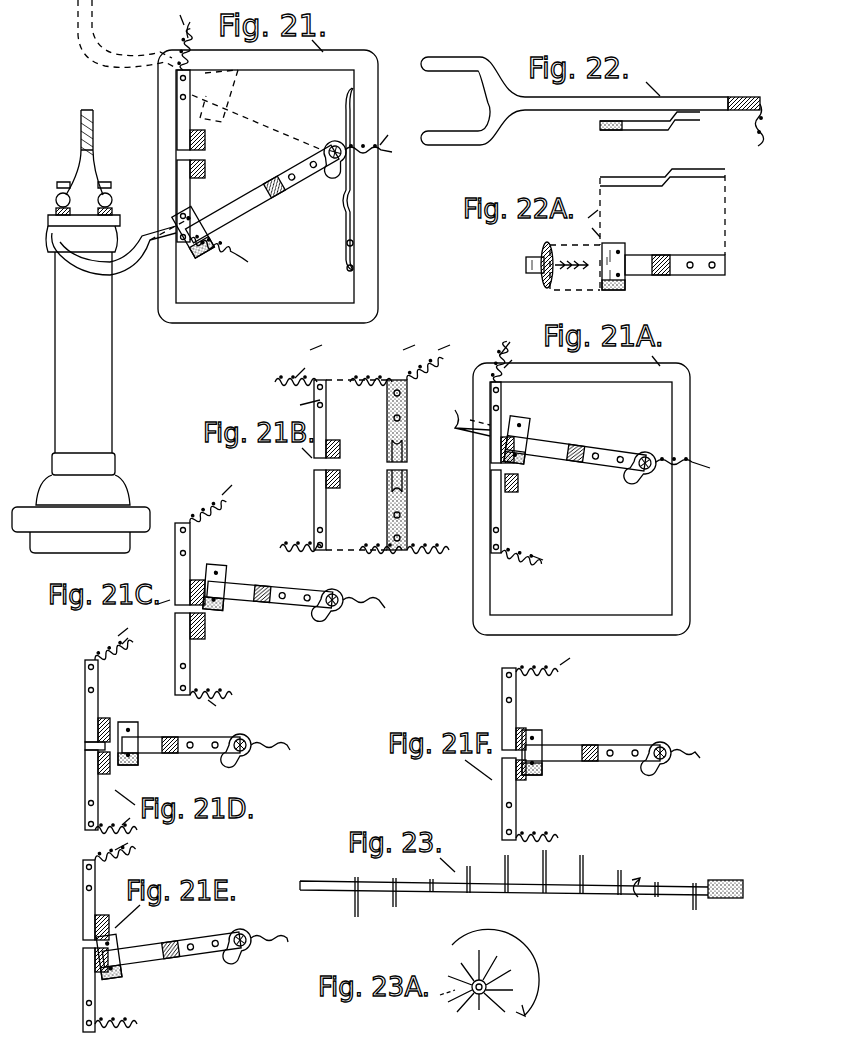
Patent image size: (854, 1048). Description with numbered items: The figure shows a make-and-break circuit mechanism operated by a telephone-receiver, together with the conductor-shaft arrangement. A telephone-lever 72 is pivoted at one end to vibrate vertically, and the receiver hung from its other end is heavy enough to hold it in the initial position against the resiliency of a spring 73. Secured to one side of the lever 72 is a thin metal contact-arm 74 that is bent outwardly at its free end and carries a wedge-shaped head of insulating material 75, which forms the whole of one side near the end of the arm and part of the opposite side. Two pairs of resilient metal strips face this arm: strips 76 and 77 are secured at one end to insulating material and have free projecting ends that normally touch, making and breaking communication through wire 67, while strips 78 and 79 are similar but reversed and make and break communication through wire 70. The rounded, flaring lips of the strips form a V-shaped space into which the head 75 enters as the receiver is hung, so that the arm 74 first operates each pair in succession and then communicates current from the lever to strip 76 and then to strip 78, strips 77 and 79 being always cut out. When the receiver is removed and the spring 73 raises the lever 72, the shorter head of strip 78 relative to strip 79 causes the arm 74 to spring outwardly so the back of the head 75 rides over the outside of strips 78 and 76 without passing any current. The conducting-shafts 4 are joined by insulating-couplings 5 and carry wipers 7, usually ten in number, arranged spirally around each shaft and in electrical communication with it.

In FIG. 23, the conducting-shaft 4 is at (345, 884).
In FIG. 23A, the conducting-shaft 4 is at (479, 995).
In FIG. 23, the insulating-coupling 5 is at (728, 880).
In FIG. 23, the wipers 7 is at (390, 900).
In FIG. 23A, the wipers 7 is at (468, 968).
In FIG. 21, the wire 67 is at (186, 28).
In FIG. 21A, the wire 67 is at (512, 348).
In FIG. 21B, the wire 67 is at (362, 365).
In FIG. 21C, the wire 67 is at (209, 502).
In FIG. 21D, the wire 67 is at (106, 641).
In FIG. 21E, the wire 67 is at (114, 849).
In FIG. 21F, the wire 67 is at (538, 675).
In FIG. 21, the wire 70 is at (235, 262).
In FIG. 21A, the wire 70 is at (532, 566).
In FIG. 21B, the wire 70 is at (292, 548).
In FIG. 21C, the wire 70 is at (216, 694).
In FIG. 21D, the wire 70 is at (94, 832).
In FIG. 21E, the wire 70 is at (84, 1022).
In FIG. 21F, the wire 70 is at (538, 828).
In FIG. 21, the telephone-lever 72 is at (282, 168).
In FIG. 22, the telephone-lever 72 is at (562, 103).
In FIG. 21A, the telephone-lever 72 is at (628, 455).
In FIG. 21C, the telephone-lever 72 is at (318, 598).
In FIG. 21D, the telephone-lever 72 is at (205, 737).
In FIG. 21E, the telephone-lever 72 is at (205, 948).
In FIG. 21F, the telephone-lever 72 is at (625, 748).
In FIG. 21, the spring 73 is at (346, 208).
In FIG. 21, the contact-arm 74 is at (230, 205).
In FIG. 22, the contact-arm 74 is at (628, 130).
In FIG. 22A, the contact-arm 74 is at (548, 255).
In FIG. 21, the insulating material 75 is at (230, 225).
In FIG. 22, the insulating material 75 is at (600, 123).
In FIG. 22A, the insulating material 75 is at (542, 278).
In FIG. 21A, the insulating material 75 is at (528, 462).
In FIG. 21C, the insulating material 75 is at (212, 622).
In FIG. 21D, the insulating material 75 is at (122, 770).
In FIG. 21E, the insulating material 75 is at (124, 985).
In FIG. 21F, the insulating material 75 is at (535, 780).
In FIG. 21, the contact-strip 76 is at (177, 123).
In FIG. 21A, the contact-strip 76 is at (494, 443).
In FIG. 21B, the contact-strip 76 is at (316, 418).
In FIG. 21C, the contact-strip 76 is at (186, 575).
In FIG. 21D, the contact-strip 76 is at (90, 698).
In FIG. 21E, the contact-strip 76 is at (88, 890).
In FIG. 21F, the contact-strip 76 is at (508, 722).
In FIG. 21, the contact-strip 77 is at (205, 133).
In FIG. 21A, the contact-strip 77 is at (507, 450).
In FIG. 21B, the contact-strip 77 is at (334, 440).
In FIG. 21C, the contact-strip 77 is at (200, 578).
In FIG. 21D, the contact-strip 77 is at (103, 718).
In FIG. 21E, the contact-strip 77 is at (105, 915).
In FIG. 21F, the contact-strip 77 is at (522, 728).
In FIG. 21, the contact-strip 78 is at (185, 180).
In FIG. 21A, the contact-strip 78 is at (498, 492).
In FIG. 21B, the contact-strip 78 is at (316, 483).
In FIG. 21C, the contact-strip 78 is at (183, 632).
In FIG. 21D, the contact-strip 78 is at (90, 765).
In FIG. 21E, the contact-strip 78 is at (88, 958).
In FIG. 21F, the contact-strip 78 is at (508, 775).
In FIG. 21, the contact-strip 79 is at (205, 165).
In FIG. 21A, the contact-strip 79 is at (520, 490).
In FIG. 21B, the contact-strip 79 is at (332, 490).
In FIG. 21C, the contact-strip 79 is at (200, 640).
In FIG. 21D, the contact-strip 79 is at (108, 795).
In FIG. 21E, the contact-strip 79 is at (105, 975).
In FIG. 21F, the contact-strip 79 is at (522, 785).